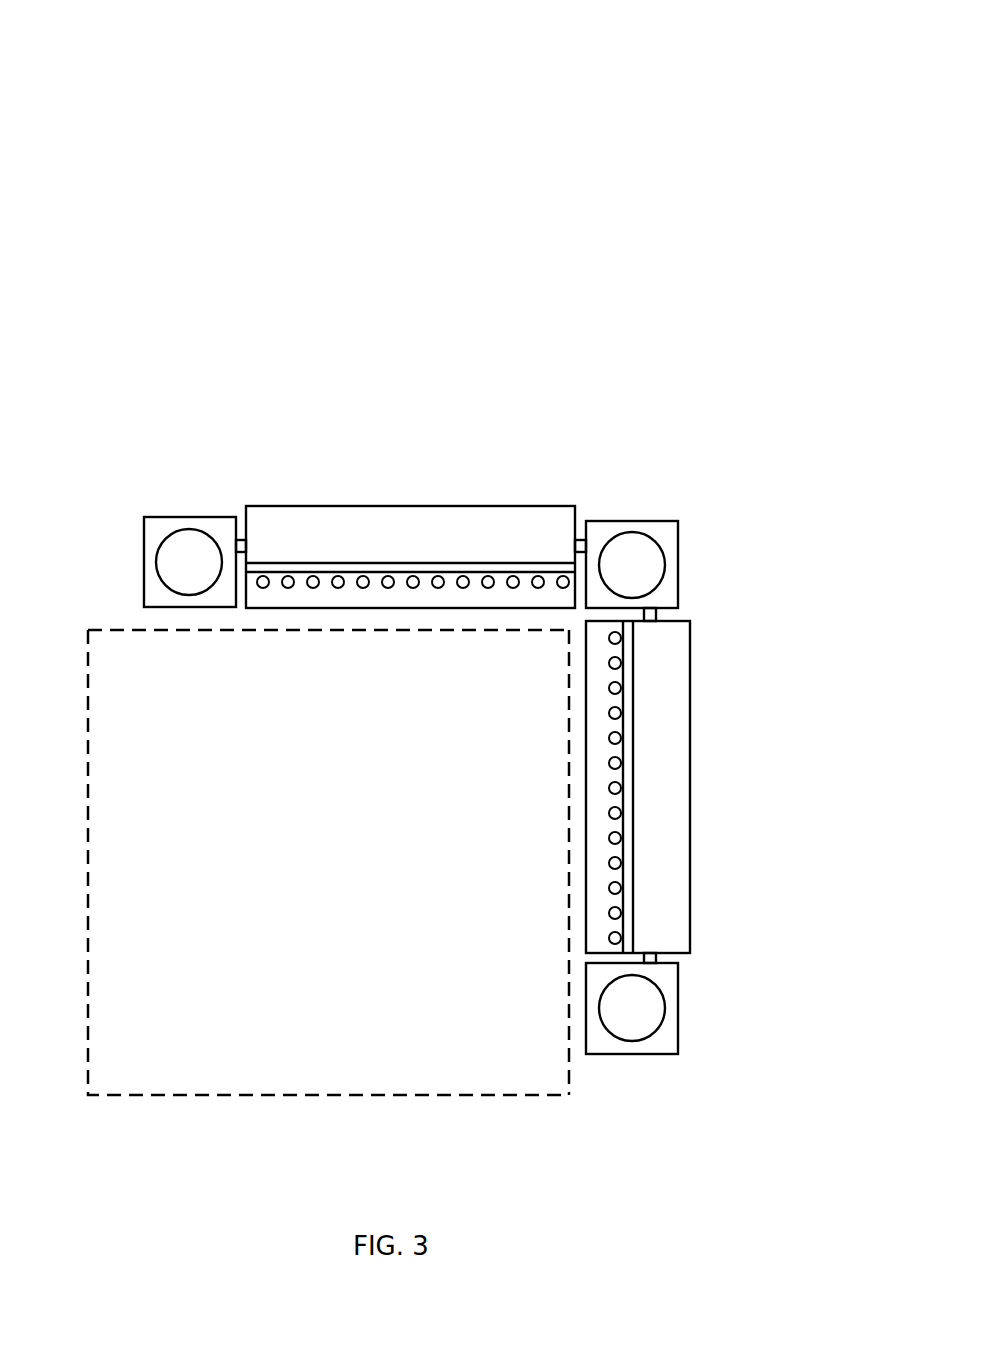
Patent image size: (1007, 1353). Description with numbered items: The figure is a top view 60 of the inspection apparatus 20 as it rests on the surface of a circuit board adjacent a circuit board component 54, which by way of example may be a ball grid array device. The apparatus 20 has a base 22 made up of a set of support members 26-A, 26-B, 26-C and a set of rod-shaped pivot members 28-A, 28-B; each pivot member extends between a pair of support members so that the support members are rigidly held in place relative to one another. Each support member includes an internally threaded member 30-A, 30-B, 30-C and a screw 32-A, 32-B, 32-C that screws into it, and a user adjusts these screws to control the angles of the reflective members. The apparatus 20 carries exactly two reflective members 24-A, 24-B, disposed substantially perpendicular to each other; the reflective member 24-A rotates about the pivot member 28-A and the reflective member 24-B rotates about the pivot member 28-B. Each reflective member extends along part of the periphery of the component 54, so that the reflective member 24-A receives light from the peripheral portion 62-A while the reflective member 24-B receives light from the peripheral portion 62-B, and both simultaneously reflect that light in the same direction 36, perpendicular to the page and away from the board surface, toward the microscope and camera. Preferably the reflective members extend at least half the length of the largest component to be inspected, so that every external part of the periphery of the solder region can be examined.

The top view 60 is at (721, 90).
The inspection apparatus 20 is at (598, 300).
The base 22 is at (701, 400).
The support member 26-A is at (128, 508).
The support member 26-B is at (700, 508).
The support member 26-C is at (700, 962).
The internally threaded member 30-A is at (178, 522).
The internally threaded member 30-B is at (652, 522).
The internally threaded member 30-C is at (607, 1044).
The screw 32-A is at (170, 548).
The screw 32-B is at (635, 552).
The screw 32-C is at (644, 1020).
The pivot member 28-A is at (237, 489).
The pivot member 28-B is at (708, 958).
The reflective member 24-A is at (392, 520).
The reflective member 24-B is at (680, 770).
The direction 36 is at (478, 527).
The circuit board component 54 is at (345, 875).
The peripheral portion 62-A is at (329, 644).
The peripheral portion 62-B is at (553, 861).